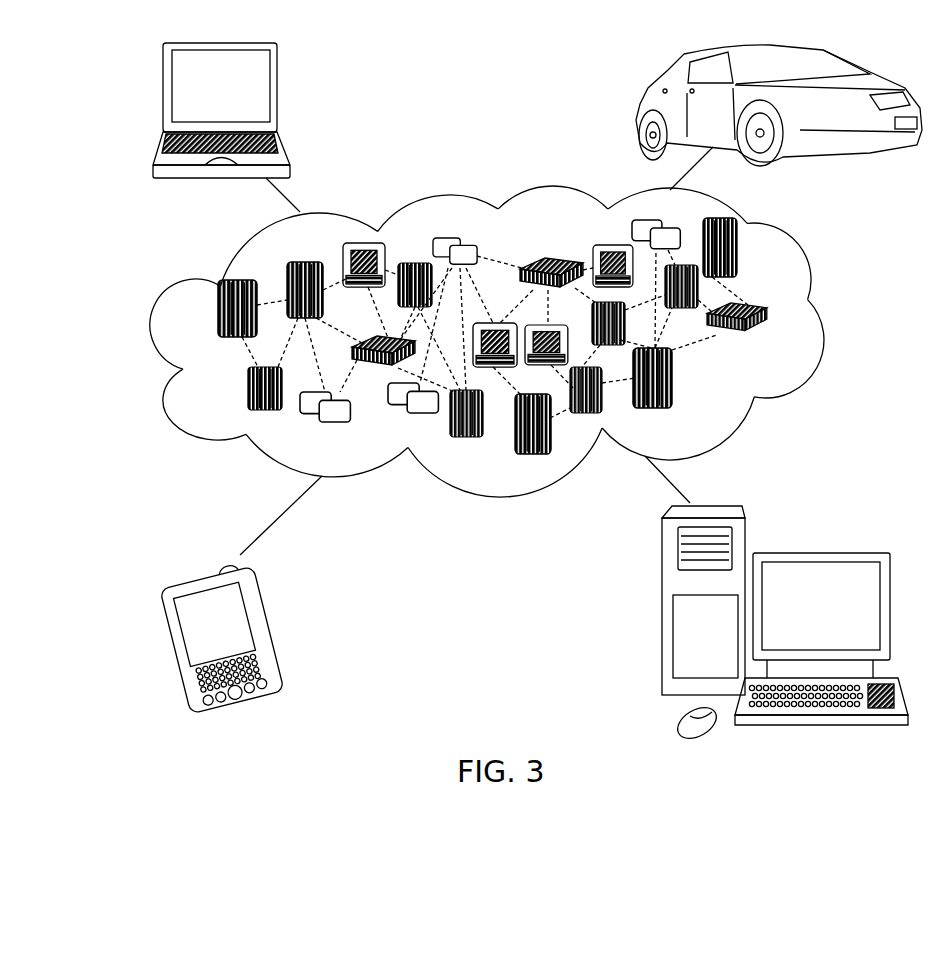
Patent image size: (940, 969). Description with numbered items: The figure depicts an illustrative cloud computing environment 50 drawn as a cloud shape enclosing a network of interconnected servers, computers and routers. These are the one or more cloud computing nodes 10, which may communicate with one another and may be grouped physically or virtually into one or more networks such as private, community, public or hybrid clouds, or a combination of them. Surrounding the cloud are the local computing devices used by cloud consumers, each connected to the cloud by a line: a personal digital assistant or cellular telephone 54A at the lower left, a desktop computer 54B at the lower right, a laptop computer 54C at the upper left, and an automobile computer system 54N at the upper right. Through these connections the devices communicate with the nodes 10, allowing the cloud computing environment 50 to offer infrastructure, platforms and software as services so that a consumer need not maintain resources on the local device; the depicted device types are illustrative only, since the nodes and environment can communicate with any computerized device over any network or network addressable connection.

The cloud computing node 10 is at (535, 336).
The cloud computing environment 50 is at (821, 319).
The personal digital assistant or cellular telephone 54A is at (268, 630).
The desktop computer 54B is at (818, 552).
The laptop computer 54C is at (280, 93).
The automobile computer system 54N is at (638, 108).